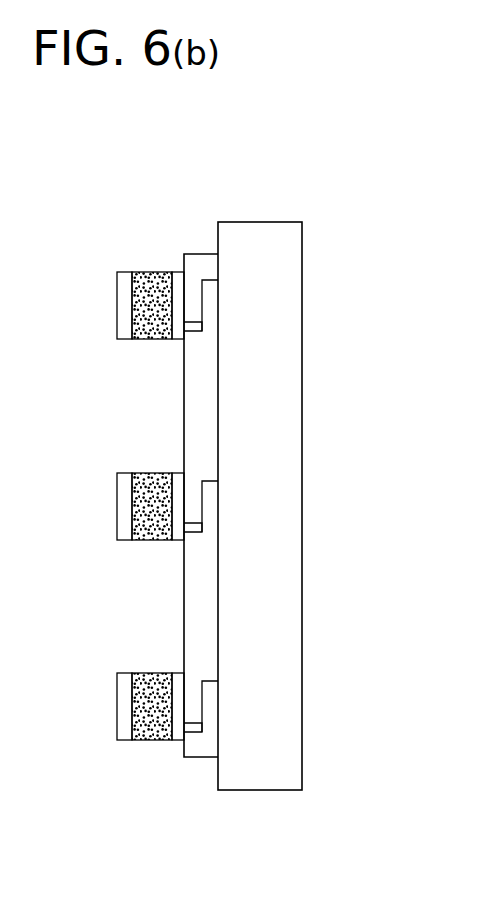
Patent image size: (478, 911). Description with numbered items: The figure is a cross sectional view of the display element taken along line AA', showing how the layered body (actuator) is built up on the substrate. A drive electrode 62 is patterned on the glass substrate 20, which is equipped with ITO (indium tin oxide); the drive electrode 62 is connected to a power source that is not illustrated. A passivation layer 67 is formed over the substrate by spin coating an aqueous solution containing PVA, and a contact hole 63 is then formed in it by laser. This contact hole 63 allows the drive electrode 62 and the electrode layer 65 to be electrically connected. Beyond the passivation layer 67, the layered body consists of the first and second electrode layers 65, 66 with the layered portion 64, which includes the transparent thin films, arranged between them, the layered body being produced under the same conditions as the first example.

The glass substrate 20 is at (258, 222).
The passivation layer 67 is at (203, 254).
The second electrode layer 66 is at (125, 340).
The layered portion 64 is at (153, 285).
The first electrode layer 65 is at (173, 340).
The drive electrode 62 is at (216, 303).
The contact hole 63 is at (194, 327).